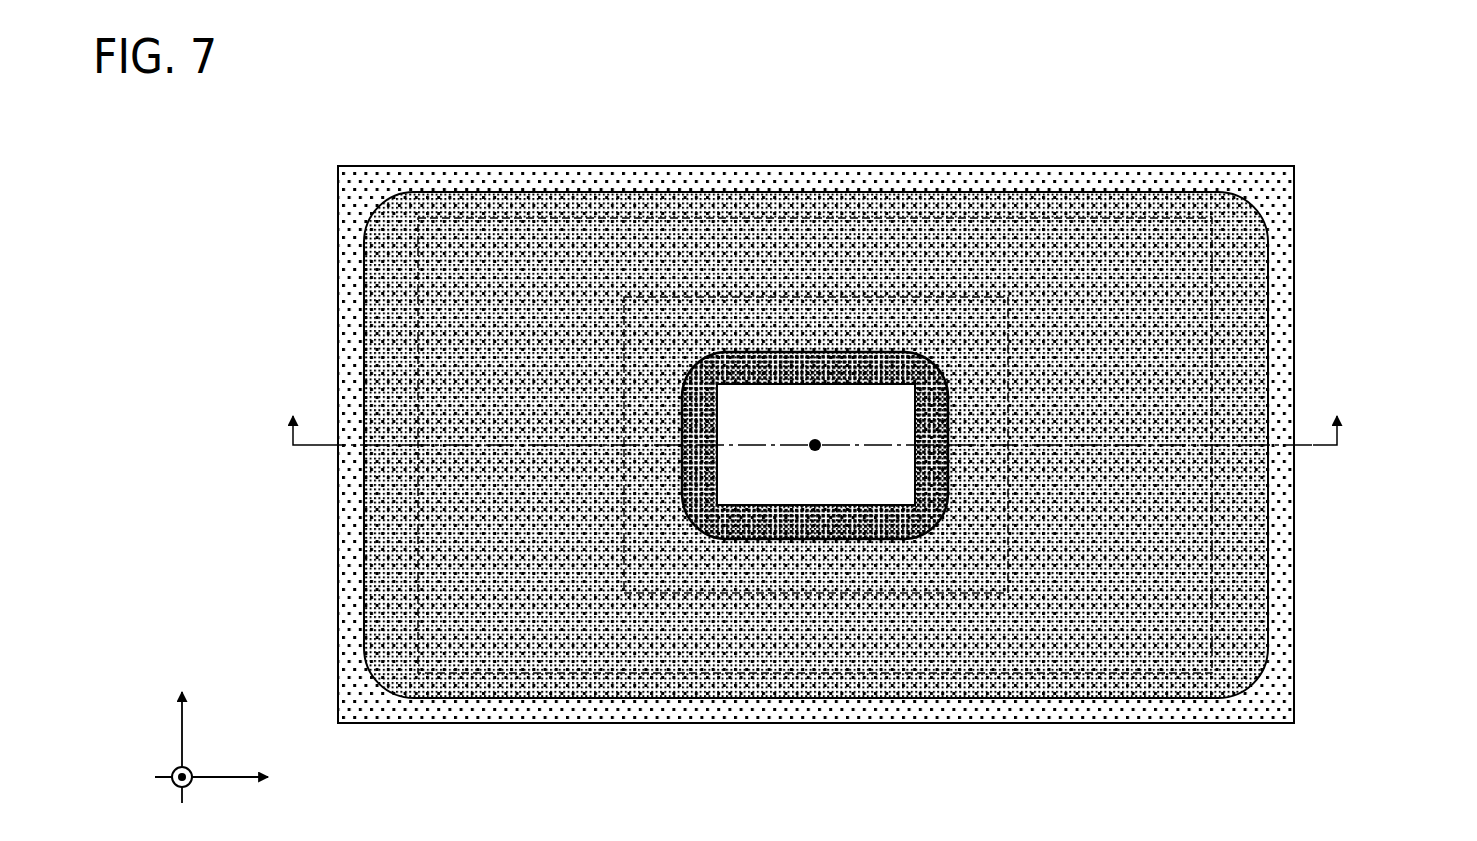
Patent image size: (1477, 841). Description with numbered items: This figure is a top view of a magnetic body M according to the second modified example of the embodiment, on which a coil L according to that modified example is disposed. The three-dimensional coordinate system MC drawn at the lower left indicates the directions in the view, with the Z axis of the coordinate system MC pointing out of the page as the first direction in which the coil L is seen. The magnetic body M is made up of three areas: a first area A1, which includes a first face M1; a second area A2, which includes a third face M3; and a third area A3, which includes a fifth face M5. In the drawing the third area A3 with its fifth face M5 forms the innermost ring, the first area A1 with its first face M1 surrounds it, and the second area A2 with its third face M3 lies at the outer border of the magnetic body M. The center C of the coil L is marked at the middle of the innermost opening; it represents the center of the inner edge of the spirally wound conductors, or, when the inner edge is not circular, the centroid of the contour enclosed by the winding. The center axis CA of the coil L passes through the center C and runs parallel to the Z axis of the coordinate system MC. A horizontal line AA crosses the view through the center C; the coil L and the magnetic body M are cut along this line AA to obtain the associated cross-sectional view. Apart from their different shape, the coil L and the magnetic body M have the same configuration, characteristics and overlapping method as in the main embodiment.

The magnetic body M is at (890, 441).
The first area A1 is at (816, 400).
The first face M1 is at (1150, 240).
The second area A2 is at (890, 444).
The third face M3 is at (1280, 318).
The third area A3 is at (815, 420).
The fifth face M5 is at (836, 370).
The coil L is at (1268, 338).
The center of the coil C is at (905, 395).
The center axis of the coil CA is at (824, 430).
The line AA is at (814, 412).
The three-dimensional coordinate system MC is at (206, 756).